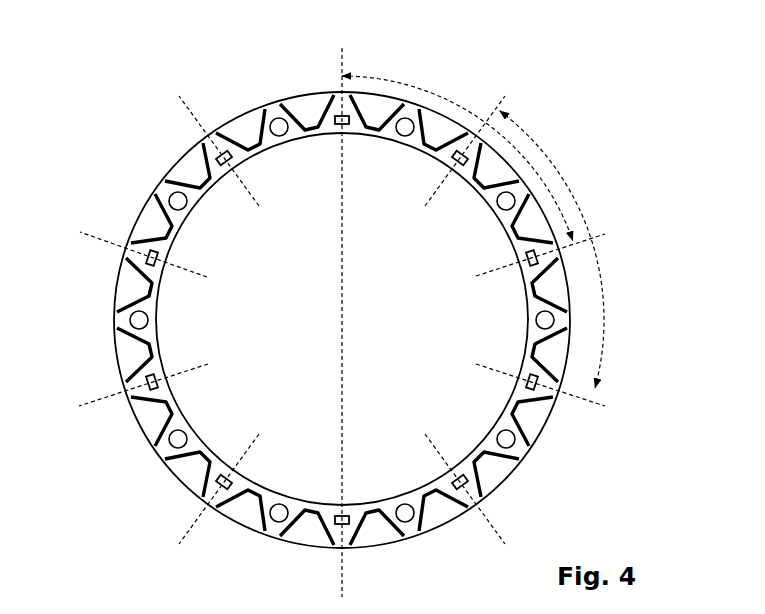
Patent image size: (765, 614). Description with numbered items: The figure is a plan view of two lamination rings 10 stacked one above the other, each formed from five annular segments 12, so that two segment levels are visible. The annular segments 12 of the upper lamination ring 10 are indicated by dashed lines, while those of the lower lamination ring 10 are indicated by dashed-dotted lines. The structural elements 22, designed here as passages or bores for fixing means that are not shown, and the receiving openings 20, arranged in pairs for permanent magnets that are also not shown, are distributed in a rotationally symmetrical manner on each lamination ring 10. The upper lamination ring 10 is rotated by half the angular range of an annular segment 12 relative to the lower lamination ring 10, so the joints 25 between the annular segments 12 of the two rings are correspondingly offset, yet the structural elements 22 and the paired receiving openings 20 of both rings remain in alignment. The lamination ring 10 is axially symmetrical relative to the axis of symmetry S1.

The lamination ring 10 is at (268, 101).
The annular segment 12 is at (389, 77).
The receiving opening 20 is at (242, 117).
The structural element 22 is at (287, 138).
The joint 25 is at (452, 158).
The axis of symmetry S1 is at (337, 565).